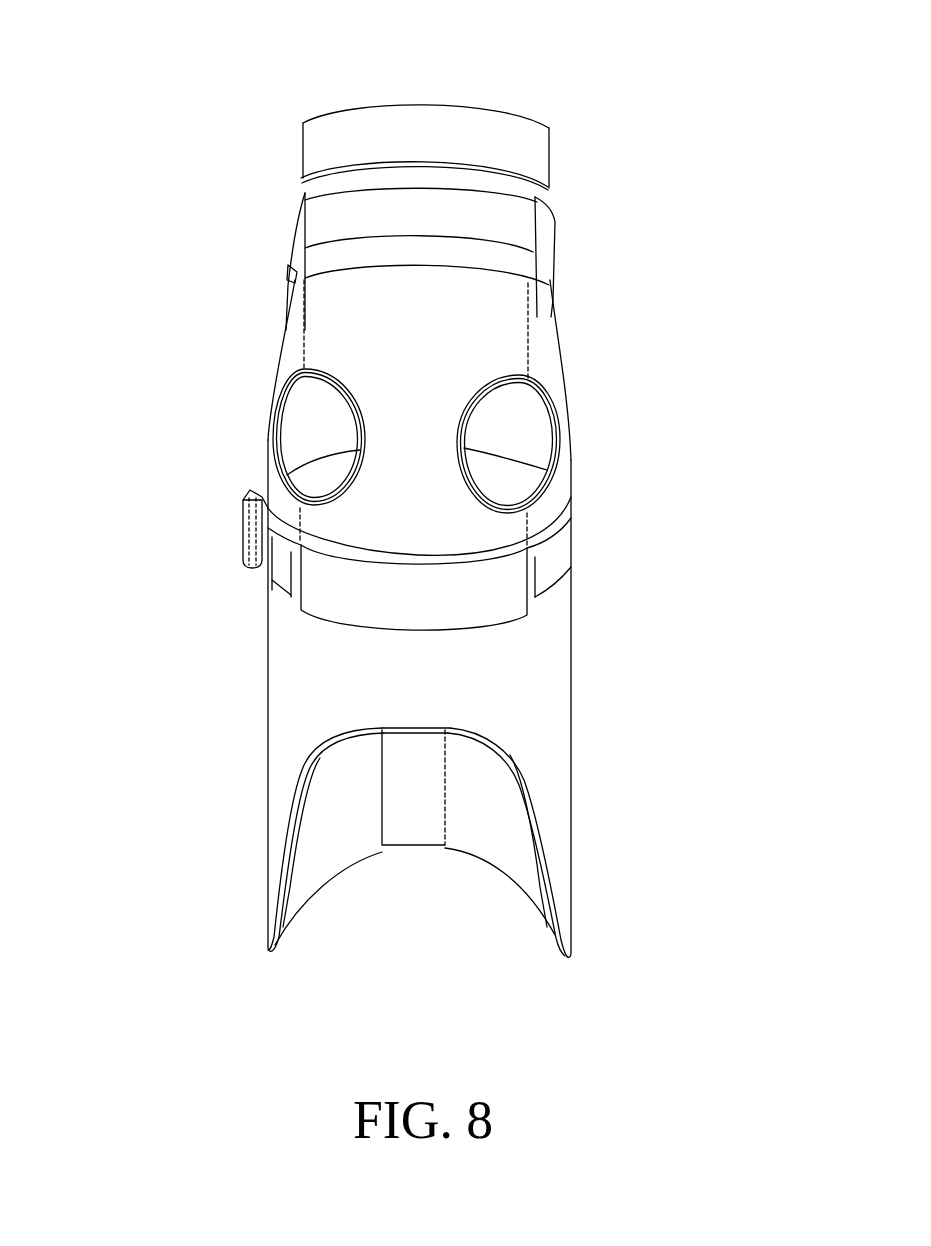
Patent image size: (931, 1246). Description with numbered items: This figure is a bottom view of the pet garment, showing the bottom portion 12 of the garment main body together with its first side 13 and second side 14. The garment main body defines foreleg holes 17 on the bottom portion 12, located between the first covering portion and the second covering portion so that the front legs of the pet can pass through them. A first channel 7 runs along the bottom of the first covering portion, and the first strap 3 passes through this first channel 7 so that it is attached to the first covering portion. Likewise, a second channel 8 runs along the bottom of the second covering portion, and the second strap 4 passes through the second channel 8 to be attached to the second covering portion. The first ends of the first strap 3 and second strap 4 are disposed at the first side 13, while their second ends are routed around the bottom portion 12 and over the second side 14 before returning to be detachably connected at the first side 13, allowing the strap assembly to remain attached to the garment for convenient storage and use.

The first strap 3 is at (424, 205).
The first channel 7 is at (290, 237).
The foreleg holes 17 is at (517, 422).
The second strap 4 is at (556, 556).
The second channel 8 is at (338, 575).
The bottom portion 12 is at (472, 677).
The first side 13 is at (265, 697).
The second side 14 is at (572, 740).